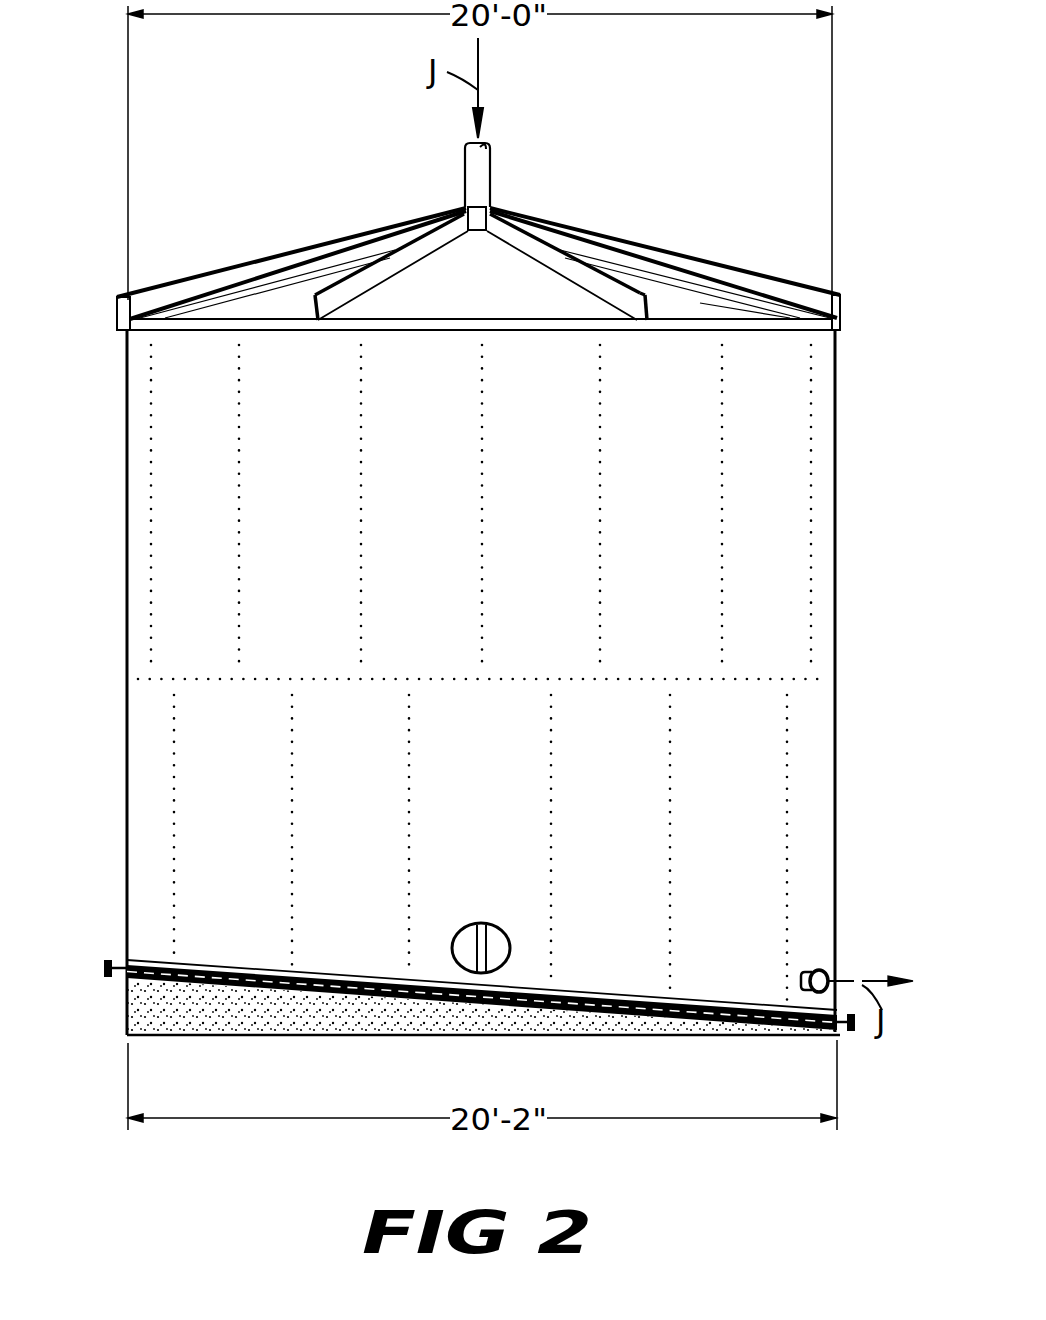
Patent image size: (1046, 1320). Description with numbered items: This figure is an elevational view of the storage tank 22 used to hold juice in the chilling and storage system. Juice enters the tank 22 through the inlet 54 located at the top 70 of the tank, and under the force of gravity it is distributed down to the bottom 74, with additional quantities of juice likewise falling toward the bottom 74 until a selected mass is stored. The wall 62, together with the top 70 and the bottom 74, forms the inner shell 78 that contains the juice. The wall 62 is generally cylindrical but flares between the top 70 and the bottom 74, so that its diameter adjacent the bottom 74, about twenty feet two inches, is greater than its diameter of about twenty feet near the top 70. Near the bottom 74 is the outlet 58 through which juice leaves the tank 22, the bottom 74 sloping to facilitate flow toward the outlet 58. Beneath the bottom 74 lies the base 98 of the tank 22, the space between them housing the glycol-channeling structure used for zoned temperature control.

The storage tank 22 is at (478, 236).
The inlet 54 is at (481, 205).
The top 70 is at (655, 285).
The inner shell 78 is at (118, 476).
The wall 62 is at (827, 560).
The outlet 58 is at (826, 970).
The bottom 74 is at (290, 985).
The base 98 is at (370, 1018).